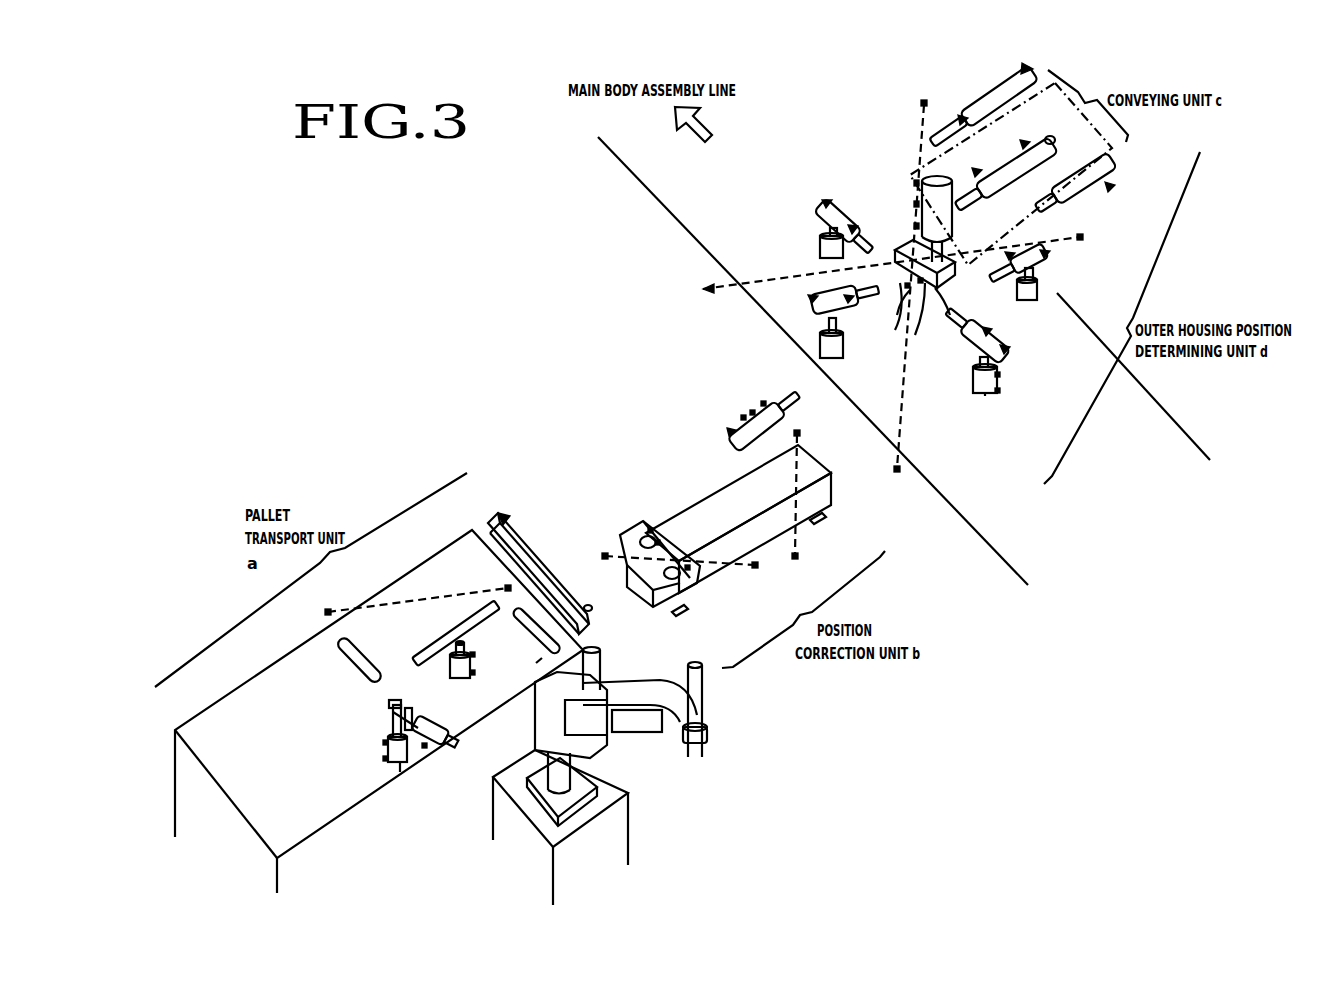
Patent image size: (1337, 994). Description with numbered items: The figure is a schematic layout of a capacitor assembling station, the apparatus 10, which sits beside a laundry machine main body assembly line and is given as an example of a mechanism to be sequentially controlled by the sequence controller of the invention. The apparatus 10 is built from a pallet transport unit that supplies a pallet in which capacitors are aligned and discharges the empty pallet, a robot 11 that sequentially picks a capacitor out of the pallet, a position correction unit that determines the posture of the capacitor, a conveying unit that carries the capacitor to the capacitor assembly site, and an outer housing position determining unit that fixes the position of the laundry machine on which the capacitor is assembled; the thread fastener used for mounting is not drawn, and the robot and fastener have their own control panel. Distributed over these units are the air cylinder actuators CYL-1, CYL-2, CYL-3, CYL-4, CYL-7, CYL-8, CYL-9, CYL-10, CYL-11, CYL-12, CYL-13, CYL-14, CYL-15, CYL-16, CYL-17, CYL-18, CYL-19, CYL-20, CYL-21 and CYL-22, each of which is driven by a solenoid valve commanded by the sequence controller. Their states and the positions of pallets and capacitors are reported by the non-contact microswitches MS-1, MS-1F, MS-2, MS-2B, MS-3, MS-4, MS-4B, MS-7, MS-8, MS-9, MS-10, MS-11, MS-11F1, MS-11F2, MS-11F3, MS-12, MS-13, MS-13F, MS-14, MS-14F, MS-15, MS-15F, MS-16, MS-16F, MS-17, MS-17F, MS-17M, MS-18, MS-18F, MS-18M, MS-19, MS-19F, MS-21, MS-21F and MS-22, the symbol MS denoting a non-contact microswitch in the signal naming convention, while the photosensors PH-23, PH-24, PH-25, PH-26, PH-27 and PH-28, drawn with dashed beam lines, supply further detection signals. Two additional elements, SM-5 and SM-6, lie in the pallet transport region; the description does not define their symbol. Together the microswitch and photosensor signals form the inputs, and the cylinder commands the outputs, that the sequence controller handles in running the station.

The apparatus 10 is at (552, 385).
The robot 11 is at (620, 820).
The air cylinder actuator CYL-1 is at (532, 555).
The air cylinder actuator CYL-2 is at (445, 650).
The air cylinder actuator CYL-3 is at (440, 722).
The air cylinder actuator CYL-4 is at (400, 765).
The air cylinder actuator CYL-7 is at (720, 709).
The air cylinder actuator CYL-8 is at (822, 468).
The air cylinder actuator CYL-9 is at (640, 538).
The air cylinder actuator CYL-10 is at (680, 580).
The air cylinder actuator CYL-11 is at (762, 429).
The air cylinder actuator CYL-12 is at (1110, 182).
The air cylinder actuator CYL-13 is at (1003, 353).
The air cylinder actuator CYL-14 is at (843, 340).
The air cylinder actuator CYL-15 is at (820, 205).
The air cylinder actuator CYL-16 is at (1037, 272).
The air cylinder actuator CYL-17 is at (1008, 216).
The air cylinder actuator CYL-18 is at (925, 178).
The air cylinder actuator CYL-19 is at (945, 295).
The air cylinder actuator CYL-20 is at (900, 300).
The air cylinder actuator CYL-21 is at (1035, 76).
The air cylinder actuator CYL-22 is at (974, 405).
The non-contact microswitch MS-1 is at (588, 608).
The non-contact microswitch MS-1F is at (505, 515).
The non-contact microswitch MS-2 is at (488, 659).
The non-contact microswitch MS-2B is at (494, 675).
The non-contact microswitch MS-3 is at (427, 748).
The non-contact microswitch MS-4 is at (384, 742).
The non-contact microswitch MS-4B is at (383, 758).
The non-contact microswitch MS-7 is at (650, 530).
The non-contact microswitch MS-8 is at (815, 521).
The non-contact microswitch MS-9 is at (657, 540).
The non-contact microswitch MS-10 is at (690, 568).
The non-contact microswitch MS-11 is at (727, 430).
The non-contact microswitch MS-11F1 is at (762, 402).
The non-contact microswitch MS-11F2 is at (751, 411).
The non-contact microswitch MS-11F3 is at (742, 416).
The non-contact microswitch MS-12 is at (1108, 186).
The non-contact microswitch MS-13 is at (1006, 348).
The non-contact microswitch MS-13F is at (988, 330).
The non-contact microswitch MS-14 is at (810, 298).
The non-contact microswitch MS-14F is at (846, 297).
The non-contact microswitch MS-15 is at (824, 202).
The non-contact microswitch MS-15F is at (850, 229).
The non-contact microswitch MS-16 is at (1046, 253).
The non-contact microswitch MS-16F is at (1008, 254).
The non-contact microswitch MS-17 is at (1067, 159).
The non-contact microswitch MS-17F is at (963, 153).
The non-contact microswitch MS-17M is at (1015, 130).
The non-contact microswitch MS-18 is at (914, 183).
The non-contact microswitch MS-18F is at (914, 226).
The non-contact microswitch MS-18M is at (914, 204).
The non-contact microswitch MS-19 is at (907, 288).
The non-contact microswitch MS-19F is at (920, 283).
The non-contact microswitch MS-21 is at (1022, 68).
The non-contact microswitch MS-21F is at (960, 118).
The non-contact microswitch MS-22 is at (1000, 375).
The photosensor PH-23 is at (918, 258).
The photosensor PH-24 is at (902, 301).
The photosensor PH-25 is at (819, 500).
The photosensor PH-26 is at (656, 555).
The photosensor PH-27 is at (537, 665).
The photosensor PH-28 is at (395, 604).
The stopper member SM-5 is at (345, 650).
The stopper member SM-6 is at (555, 605).